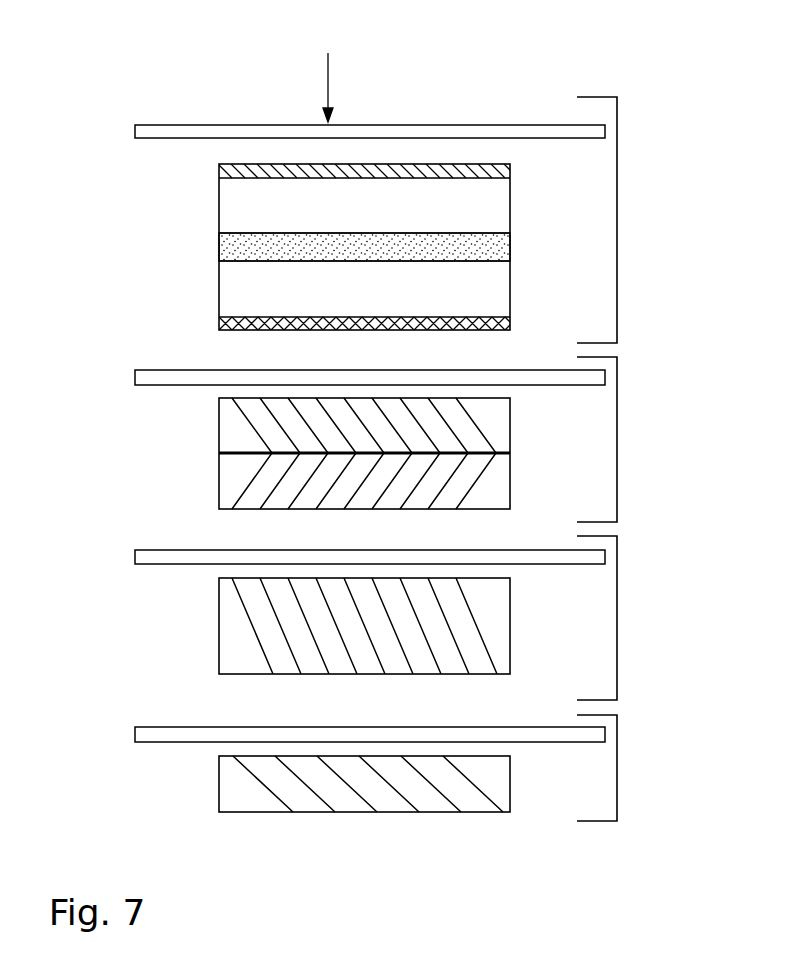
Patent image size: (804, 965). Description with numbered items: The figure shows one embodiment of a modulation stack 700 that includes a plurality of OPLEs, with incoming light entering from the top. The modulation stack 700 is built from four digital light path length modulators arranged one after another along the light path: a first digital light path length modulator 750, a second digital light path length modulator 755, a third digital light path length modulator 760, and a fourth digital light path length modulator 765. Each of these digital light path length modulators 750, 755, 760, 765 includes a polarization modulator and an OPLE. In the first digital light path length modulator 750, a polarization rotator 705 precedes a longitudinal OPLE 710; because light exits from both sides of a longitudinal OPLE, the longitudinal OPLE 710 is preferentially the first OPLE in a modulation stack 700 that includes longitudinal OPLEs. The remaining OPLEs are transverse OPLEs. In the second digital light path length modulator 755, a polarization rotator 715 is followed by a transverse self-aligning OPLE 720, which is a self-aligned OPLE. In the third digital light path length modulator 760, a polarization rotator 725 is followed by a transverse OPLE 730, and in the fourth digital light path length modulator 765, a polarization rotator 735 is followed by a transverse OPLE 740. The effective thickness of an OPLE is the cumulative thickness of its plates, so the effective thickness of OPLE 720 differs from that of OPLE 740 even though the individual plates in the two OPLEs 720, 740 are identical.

The modulation stack 700 is at (402, 419).
The polarization rotator 705 is at (319, 124).
The longitudinal OPLE 710 is at (410, 247).
The polarization rotator 715 is at (319, 349).
The transverse self-aligning OPLE 720 is at (418, 453).
The polarization rotator 725 is at (319, 563).
The transverse OPLE 730 is at (415, 626).
The polarization rotator 735 is at (319, 737).
The transverse OPLE 740 is at (418, 781).
The first digital light path length modulator 750 is at (402, 218).
The second digital light path length modulator 755 is at (402, 417).
The third digital light path length modulator 760 is at (402, 616).
The fourth digital light path length modulator 765 is at (402, 763).